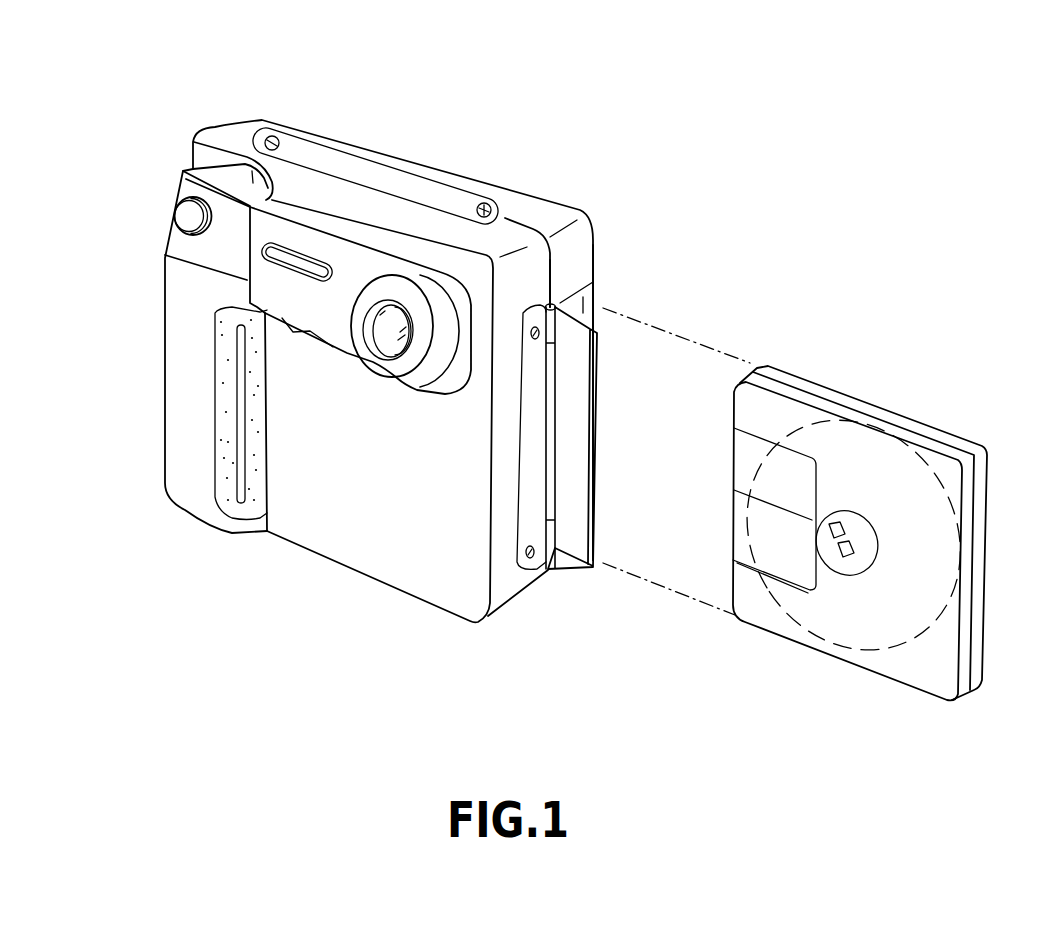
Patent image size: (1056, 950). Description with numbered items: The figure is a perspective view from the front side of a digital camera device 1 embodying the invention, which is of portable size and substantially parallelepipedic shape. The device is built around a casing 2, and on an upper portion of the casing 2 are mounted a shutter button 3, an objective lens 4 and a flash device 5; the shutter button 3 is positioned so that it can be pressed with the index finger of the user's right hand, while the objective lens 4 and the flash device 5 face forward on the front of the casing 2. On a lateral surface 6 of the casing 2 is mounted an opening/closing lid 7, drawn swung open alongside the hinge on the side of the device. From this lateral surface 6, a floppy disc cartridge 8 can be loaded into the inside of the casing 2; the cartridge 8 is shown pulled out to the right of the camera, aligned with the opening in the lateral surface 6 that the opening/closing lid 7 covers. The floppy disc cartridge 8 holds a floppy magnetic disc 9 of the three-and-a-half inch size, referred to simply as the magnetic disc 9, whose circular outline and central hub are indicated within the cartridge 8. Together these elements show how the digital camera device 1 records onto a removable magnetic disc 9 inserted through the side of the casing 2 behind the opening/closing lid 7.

The digital camera device 1 is at (249, 645).
The casing 2 is at (220, 135).
The shutter button 3 is at (183, 213).
The objective lens 4 is at (383, 328).
The flash device 5 is at (264, 249).
The lateral surface 6 is at (577, 250).
The opening/closing lid 7 is at (583, 338).
The floppy disc cartridge 8 is at (940, 453).
The floppy magnetic disc 9 is at (863, 620).